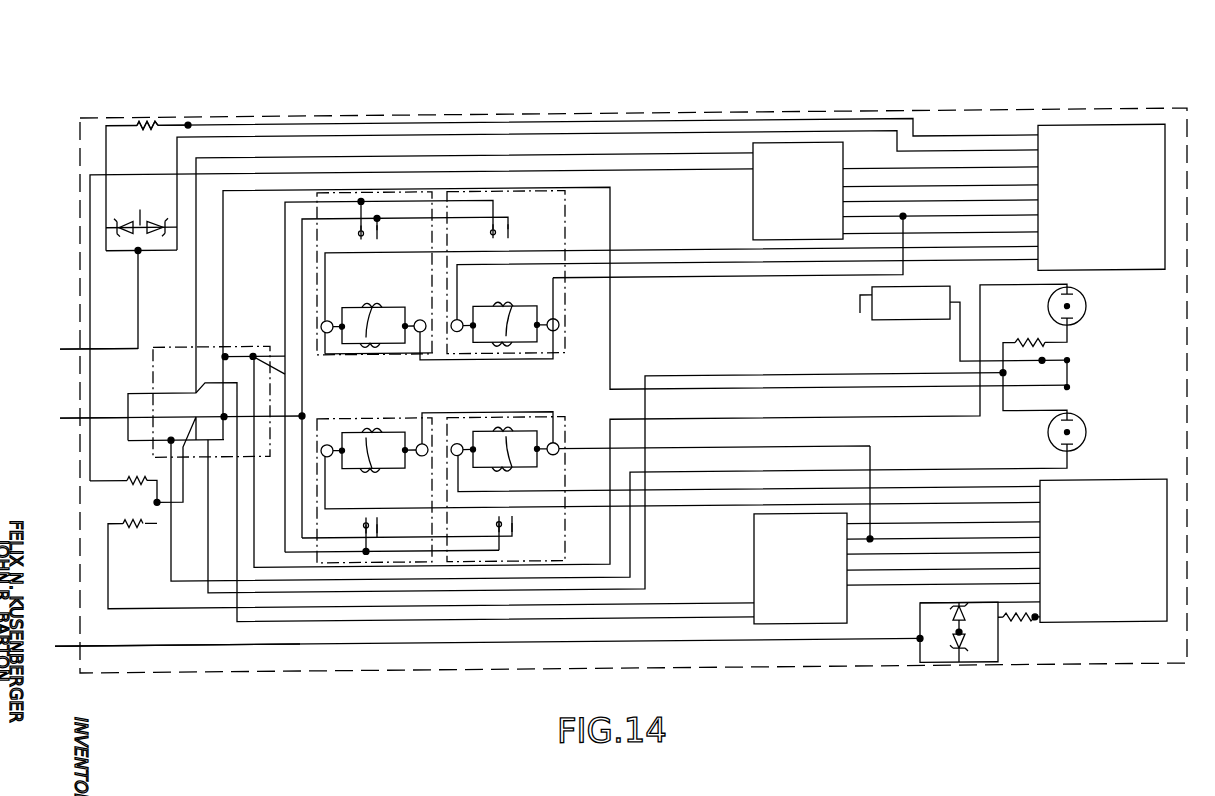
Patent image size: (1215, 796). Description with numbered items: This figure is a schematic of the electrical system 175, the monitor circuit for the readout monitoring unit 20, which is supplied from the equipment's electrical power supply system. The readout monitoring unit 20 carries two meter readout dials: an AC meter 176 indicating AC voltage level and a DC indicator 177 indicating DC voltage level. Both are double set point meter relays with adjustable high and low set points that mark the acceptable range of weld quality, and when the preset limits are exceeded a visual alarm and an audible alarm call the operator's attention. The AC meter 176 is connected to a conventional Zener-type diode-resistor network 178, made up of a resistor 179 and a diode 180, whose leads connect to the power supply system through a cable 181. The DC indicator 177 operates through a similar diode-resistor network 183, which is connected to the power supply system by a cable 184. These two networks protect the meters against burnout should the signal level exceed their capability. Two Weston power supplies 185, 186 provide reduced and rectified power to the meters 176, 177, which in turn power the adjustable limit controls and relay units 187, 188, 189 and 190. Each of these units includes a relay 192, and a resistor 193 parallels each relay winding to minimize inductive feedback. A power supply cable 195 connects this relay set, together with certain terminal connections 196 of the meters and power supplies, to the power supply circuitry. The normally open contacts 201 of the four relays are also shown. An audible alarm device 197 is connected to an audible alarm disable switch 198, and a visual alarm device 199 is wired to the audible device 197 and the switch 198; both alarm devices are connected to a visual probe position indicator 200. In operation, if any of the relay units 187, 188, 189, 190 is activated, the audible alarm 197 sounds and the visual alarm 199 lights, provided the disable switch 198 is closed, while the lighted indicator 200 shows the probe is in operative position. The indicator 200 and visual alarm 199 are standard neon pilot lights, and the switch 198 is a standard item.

The readout monitoring unit 20 is at (408, 670).
The electrical system 175 is at (80, 490).
The AC meter 176 is at (1073, 162).
The DC indicator 177 is at (1100, 609).
The diode-resistor network 178 is at (135, 125).
The resistor 179 is at (160, 125).
The diode 180 is at (141, 213).
The cable 181 is at (60, 350).
The diode-resistor network 183 is at (999, 655).
The cable 184 is at (72, 645).
The power supply 185 is at (802, 168).
The power supply 186 is at (812, 605).
The relay unit 187 is at (390, 191).
The relay unit 188 is at (495, 191).
The relay unit 189 is at (366, 414).
The relay unit 190 is at (510, 412).
The relay 192 is at (385, 343).
The resistor 193 is at (372, 305).
The power supply cable 195 is at (60, 418).
The terminal connections 196 is at (238, 344).
The audible alarm device 197 is at (872, 302).
The audible alarm disable switch 198 is at (1069, 383).
The visual alarm device 199 is at (1084, 318).
The visual probe position indicator 200 is at (1084, 447).
The normally open contacts 201 is at (490, 236).